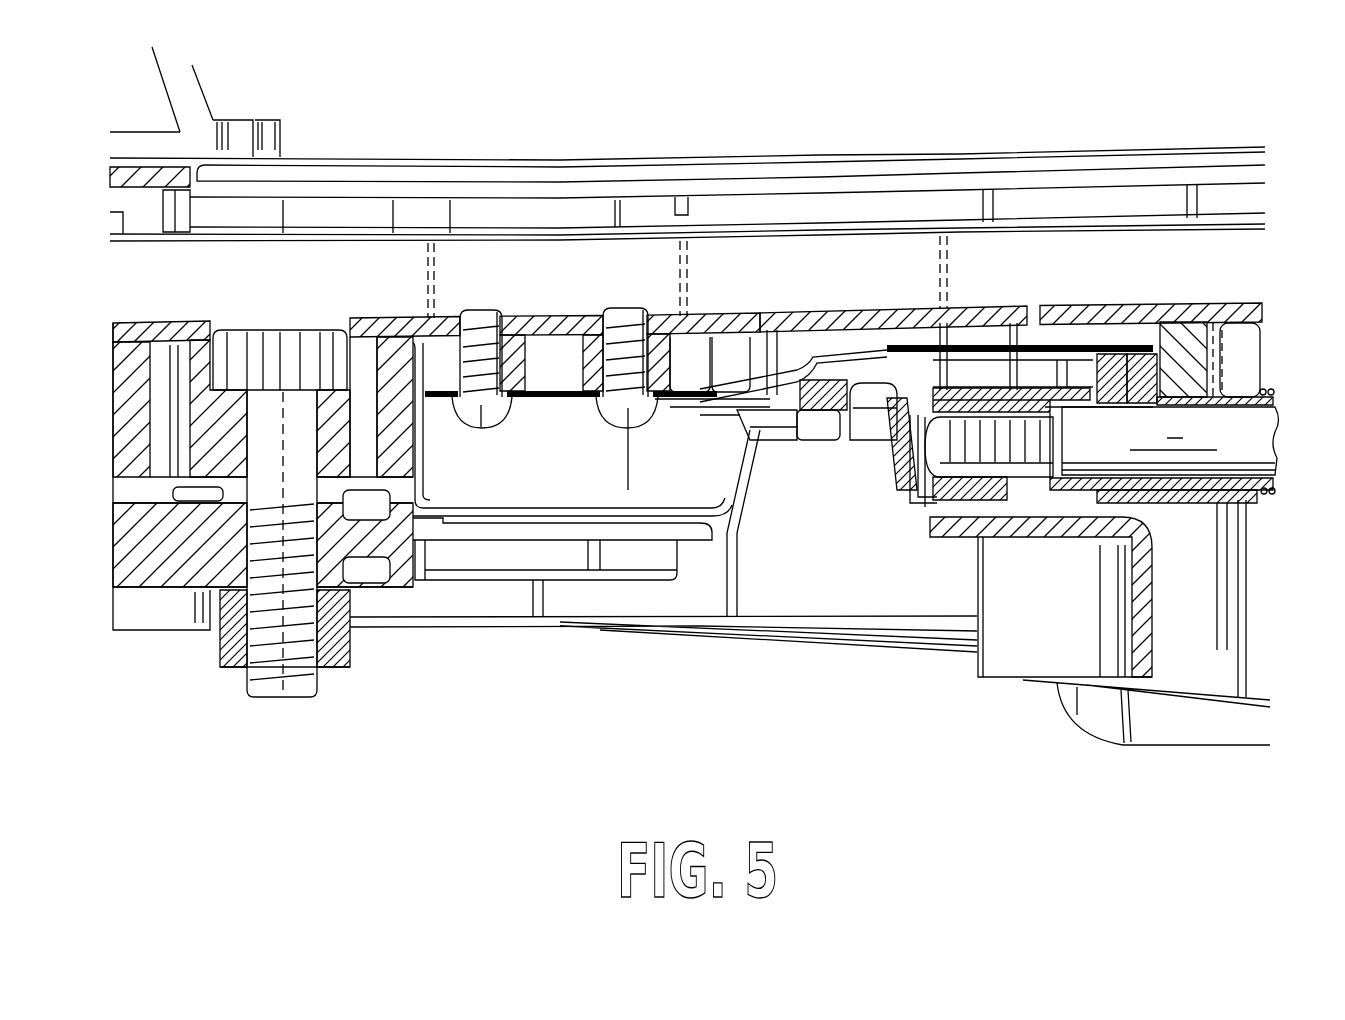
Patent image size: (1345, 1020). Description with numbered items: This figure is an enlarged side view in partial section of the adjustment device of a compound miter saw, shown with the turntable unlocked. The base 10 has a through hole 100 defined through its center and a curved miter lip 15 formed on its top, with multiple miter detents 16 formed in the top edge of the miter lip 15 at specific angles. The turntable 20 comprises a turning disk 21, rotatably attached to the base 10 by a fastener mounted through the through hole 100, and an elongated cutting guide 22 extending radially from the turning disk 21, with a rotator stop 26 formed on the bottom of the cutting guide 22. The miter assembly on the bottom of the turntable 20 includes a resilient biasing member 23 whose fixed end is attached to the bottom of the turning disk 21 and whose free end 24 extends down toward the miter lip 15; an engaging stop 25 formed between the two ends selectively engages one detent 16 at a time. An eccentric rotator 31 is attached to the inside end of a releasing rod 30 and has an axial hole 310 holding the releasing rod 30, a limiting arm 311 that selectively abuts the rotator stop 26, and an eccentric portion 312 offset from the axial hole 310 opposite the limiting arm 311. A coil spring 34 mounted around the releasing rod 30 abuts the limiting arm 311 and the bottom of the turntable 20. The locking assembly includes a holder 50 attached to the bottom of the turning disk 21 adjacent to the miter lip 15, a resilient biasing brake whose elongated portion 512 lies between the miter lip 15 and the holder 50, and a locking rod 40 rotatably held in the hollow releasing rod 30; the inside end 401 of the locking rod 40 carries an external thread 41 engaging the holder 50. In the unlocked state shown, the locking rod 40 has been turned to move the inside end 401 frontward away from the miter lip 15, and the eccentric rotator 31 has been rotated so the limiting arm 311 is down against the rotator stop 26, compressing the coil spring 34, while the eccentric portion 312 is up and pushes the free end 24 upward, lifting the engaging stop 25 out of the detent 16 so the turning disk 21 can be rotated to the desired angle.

The base 10 is at (880, 652).
The miter lip 15 is at (893, 447).
The miter detents 16 is at (790, 440).
The turntable 20 is at (797, 158).
The turning disk 21 is at (385, 158).
The cutting guide 22 is at (1194, 150).
The resilient biasing member 23 is at (556, 398).
The free end 24 is at (1031, 350).
The engaging stop 25 is at (863, 383).
The rotator stop 26 is at (1198, 325).
The releasing rod 30 is at (1245, 390).
The eccentric rotator 31 is at (1159, 516).
The coil spring 34 is at (1275, 497).
The locking rod 40 is at (1300, 385).
The external thread 41 is at (1035, 460).
The holder 50 is at (966, 491).
The through hole 100 is at (245, 420).
The axial hole 310 is at (1118, 353).
The limiting arm 311 is at (1197, 507).
The eccentric portion 312 is at (1147, 353).
The inside end 401 is at (924, 500).
The elongated portion 512 is at (895, 482).